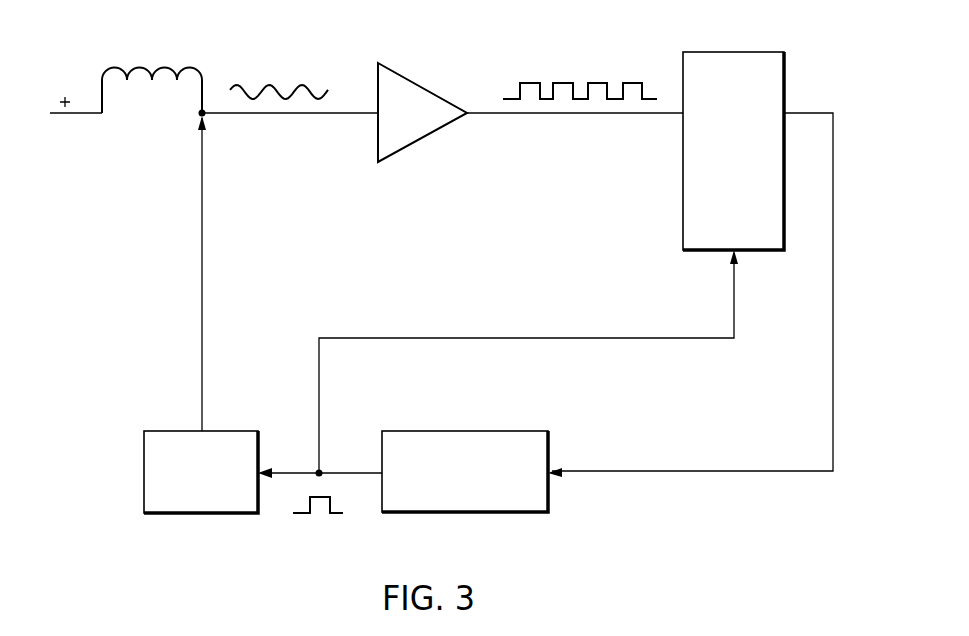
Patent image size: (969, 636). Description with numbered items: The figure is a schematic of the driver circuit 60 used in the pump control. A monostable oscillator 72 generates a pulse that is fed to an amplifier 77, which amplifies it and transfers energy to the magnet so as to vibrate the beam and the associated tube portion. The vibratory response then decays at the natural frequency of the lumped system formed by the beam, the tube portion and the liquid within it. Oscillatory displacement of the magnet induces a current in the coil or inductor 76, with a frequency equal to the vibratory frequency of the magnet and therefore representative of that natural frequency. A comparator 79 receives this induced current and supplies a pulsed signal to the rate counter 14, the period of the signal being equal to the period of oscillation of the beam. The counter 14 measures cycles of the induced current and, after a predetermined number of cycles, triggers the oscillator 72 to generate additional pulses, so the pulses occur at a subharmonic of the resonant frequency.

The coil (inductor) 76 is at (140, 68).
The comparator 79 is at (408, 78).
The counter CTR 14 is at (749, 52).
The amplifier 77 is at (153, 431).
The monostable oscillator 72 is at (543, 431).
The driver circuit 60 is at (827, 482).